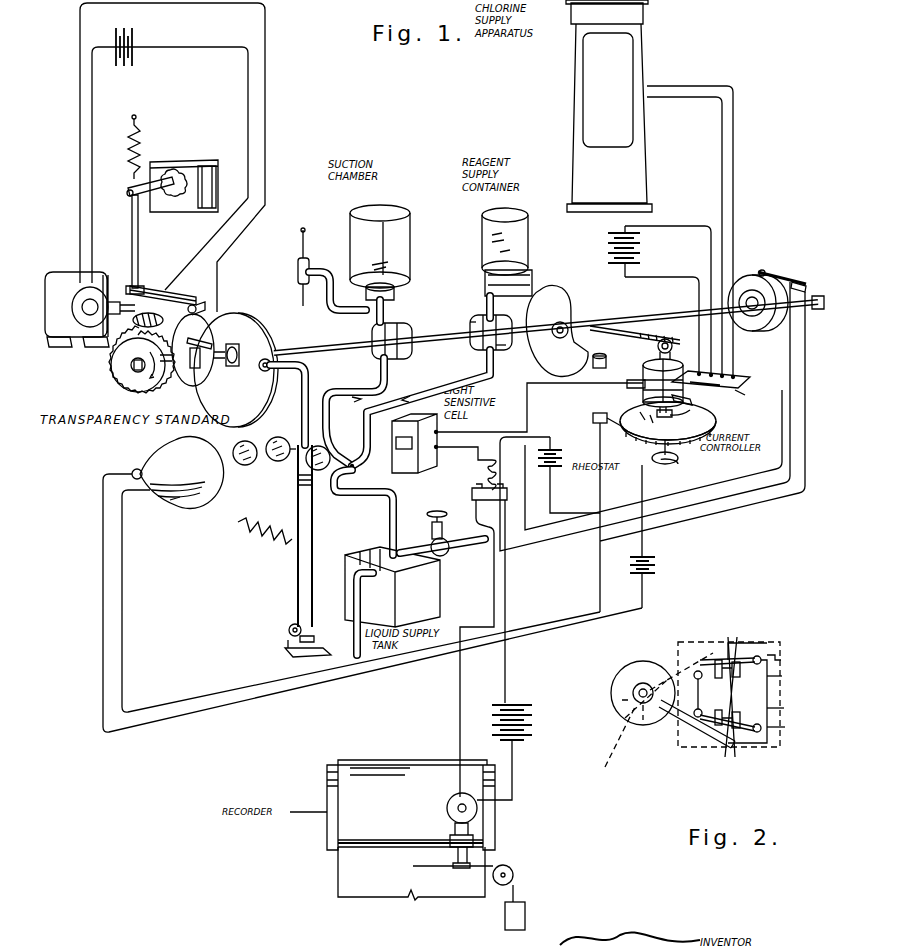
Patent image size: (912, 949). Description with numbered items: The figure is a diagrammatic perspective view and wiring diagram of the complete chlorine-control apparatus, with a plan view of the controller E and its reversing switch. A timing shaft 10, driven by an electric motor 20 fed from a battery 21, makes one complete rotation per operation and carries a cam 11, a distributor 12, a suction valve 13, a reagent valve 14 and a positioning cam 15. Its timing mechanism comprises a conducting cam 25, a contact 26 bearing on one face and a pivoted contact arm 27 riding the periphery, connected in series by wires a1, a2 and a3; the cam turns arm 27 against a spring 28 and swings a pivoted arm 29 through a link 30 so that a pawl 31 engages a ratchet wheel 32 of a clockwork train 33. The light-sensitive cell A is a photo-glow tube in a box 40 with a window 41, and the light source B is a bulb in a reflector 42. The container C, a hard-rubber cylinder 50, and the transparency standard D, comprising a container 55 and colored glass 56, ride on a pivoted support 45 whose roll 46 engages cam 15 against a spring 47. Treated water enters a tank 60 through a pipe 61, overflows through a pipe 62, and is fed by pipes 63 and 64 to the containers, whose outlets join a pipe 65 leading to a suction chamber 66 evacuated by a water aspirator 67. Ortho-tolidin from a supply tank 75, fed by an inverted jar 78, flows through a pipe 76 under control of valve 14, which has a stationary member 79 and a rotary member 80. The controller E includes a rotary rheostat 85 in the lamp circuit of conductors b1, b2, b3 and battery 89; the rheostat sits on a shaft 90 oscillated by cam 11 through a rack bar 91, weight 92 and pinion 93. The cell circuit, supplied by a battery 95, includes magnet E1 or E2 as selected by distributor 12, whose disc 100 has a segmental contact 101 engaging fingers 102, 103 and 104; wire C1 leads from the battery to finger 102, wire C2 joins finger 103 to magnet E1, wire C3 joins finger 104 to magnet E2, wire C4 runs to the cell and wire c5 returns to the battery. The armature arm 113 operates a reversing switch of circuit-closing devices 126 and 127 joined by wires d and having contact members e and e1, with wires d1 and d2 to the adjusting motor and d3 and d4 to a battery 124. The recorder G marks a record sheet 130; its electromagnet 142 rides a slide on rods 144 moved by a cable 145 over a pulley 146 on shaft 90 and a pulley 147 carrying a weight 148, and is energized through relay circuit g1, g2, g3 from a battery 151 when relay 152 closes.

In FIG. 1, the timing shaft 10 is at (310, 348).
In FIG. 1, the cam 11 is at (560, 290).
In FIG. 1, the distributor 12 is at (759, 345).
In FIG. 1, the valve 13 is at (398, 326).
In FIG. 1, the valve 14 is at (503, 326).
In FIG. 1, the cam 15 is at (248, 322).
In FIG. 1, the electric motor 20 is at (62, 286).
In FIG. 1, the battery 21 is at (129, 46).
In FIG. 1, the circuit-controlling cam 25 is at (188, 378).
In FIG. 1, the contact 26 is at (212, 330).
In FIG. 1, the pivoted contact arm 27 is at (178, 298).
In FIG. 1, the spring 28 is at (139, 158).
In FIG. 1, the pivoted arm 29 is at (162, 197).
In FIG. 1, the link 30 is at (139, 247).
In FIG. 1, the pawl 31 is at (170, 172).
In FIG. 1, the ratchet wheel 32 is at (193, 166).
In FIG. 1, the clockwork train 33 is at (216, 182).
In FIG. 1, the casing 40 is at (440, 424).
In FIG. 1, the window 41 is at (396, 440).
In FIG. 1, the reflector 42 is at (172, 498).
In FIG. 1, the support 45 is at (298, 510).
In FIG. 1, the roll 46 is at (276, 346).
In FIG. 1, the spring 47 is at (260, 556).
In FIG. 1, the hollow cylinder 50 is at (345, 442).
In FIG. 1, the container 55 is at (270, 441).
In FIG. 1, the colored glass 56 is at (242, 466).
In FIG. 1, the tank 60 is at (432, 602).
In FIG. 1, the pipe 61 is at (432, 545).
In FIG. 1, the pipe 62 is at (357, 628).
In FIG. 1, the pipe 63 is at (393, 512).
In FIG. 1, the pipe 64 is at (345, 490).
In FIG. 1, the pipe 65 is at (350, 393).
In FIG. 1, the suction chamber 66 is at (410, 229).
In FIG. 1, the water aspirator 67 is at (310, 262).
In FIG. 1, the supply tank 75 is at (485, 278).
In FIG. 1, the pipe 76 is at (448, 380).
In FIG. 1, the inverted jar 78 is at (483, 233).
In FIG. 1, the stationary member 79 is at (470, 326).
In FIG. 1, the rotary member 80 is at (500, 349).
In FIG. 1, the rotary rheostat 85 is at (712, 426).
In FIG. 1, the battery 89 is at (656, 568).
In FIG. 1, the shaft 90 is at (658, 366).
In FIG. 1, the rack bar 91 is at (660, 337).
In FIG. 1, the weight 92 is at (592, 362).
In FIG. 1, the pinion 93 is at (672, 347).
In FIG. 1, the battery 95 is at (545, 469).
In FIG. 1, the rotary disc 100 is at (745, 278).
In FIG. 1, the segmental contact portion 101 is at (760, 270).
In FIG. 1, the contact finger 102 is at (799, 283).
In FIG. 1, the contact finger 103 is at (776, 270).
In FIG. 1, the contact finger 104 is at (745, 381).
In FIG. 1, the arm 113 is at (680, 406).
In FIG. 2, the arm 113 is at (682, 715).
In FIG. 1, the battery 124 is at (606, 240).
In FIG. 1, the circuit-closing device 126 is at (741, 401).
In FIG. 2, the circuit-closing device 126 is at (700, 735).
In FIG. 2, the circuit-closing device 127 is at (687, 663).
In FIG. 1, the record sheet 130 is at (411, 873).
In FIG. 1, the cylindrical electromagnet 142 is at (455, 805).
In FIG. 1, the rods 144 is at (378, 840).
In FIG. 1, the cable 145 is at (431, 868).
In FIG. 1, the pulley 146 is at (678, 464).
In FIG. 1, the pulley 147 is at (514, 873).
In FIG. 1, the weight 148 is at (522, 913).
In FIG. 1, the battery 151 is at (528, 730).
In FIG. 1, the relay 152 is at (486, 485).
In FIG. 1, the light-sensitive cell A is at (423, 407).
In FIG. 1, the source of light B is at (150, 452).
In FIG. 1, the container C is at (361, 462).
In FIG. 1, the wire C1 is at (728, 500).
In FIG. 1, the wire C2 is at (763, 504).
In FIG. 1, the wire C3 is at (692, 494).
In FIG. 1, the wire C4 is at (578, 382).
In FIG. 1, the wire c5 is at (462, 452).
In FIG. 1, the transparency standard D is at (289, 433).
In FIG. 1, the controller E is at (711, 403).
In FIG. 1, the magnet E1 is at (638, 378).
In FIG. 1, the magnet E2 is at (655, 408).
In FIG. 1, the recorder G is at (326, 765).
In FIG. 1, the wire a1 is at (92, 132).
In FIG. 1, the wire a2 is at (80, 180).
In FIG. 1, the wire a3 is at (248, 150).
In FIG. 1, the conductor b1 is at (565, 628).
In FIG. 1, the conductor b2 is at (372, 603).
In FIG. 1, the conductor b3 is at (648, 530).
In FIG. 2, the wires d is at (728, 686).
In FIG. 1, the wire d1 is at (675, 86).
In FIG. 2, the wire d1 is at (785, 727).
In FIG. 1, the wire d2 is at (670, 97).
In FIG. 2, the wire d2 is at (784, 708).
In FIG. 1, the wire d3 is at (688, 226).
In FIG. 2, the wire d3 is at (782, 676).
In FIG. 1, the wire d4 is at (685, 277).
In FIG. 2, the wire d4 is at (781, 660).
In FIG. 2, the contact members e is at (731, 750).
In FIG. 2, the contact members e1 is at (712, 651).
In FIG. 1, the relay circuit g1 is at (510, 583).
In FIG. 1, the relay circuit g2 is at (494, 600).
In FIG. 1, the relay circuit g3 is at (514, 786).